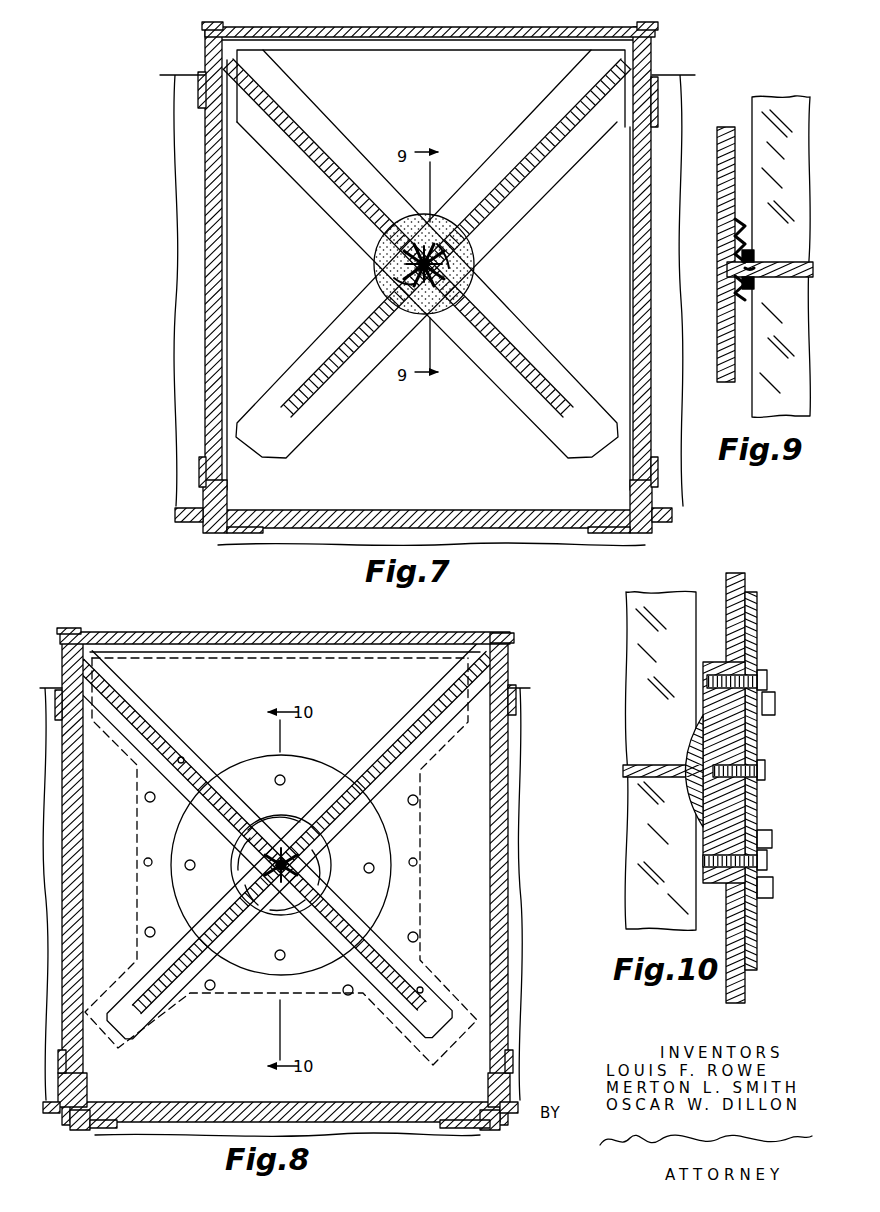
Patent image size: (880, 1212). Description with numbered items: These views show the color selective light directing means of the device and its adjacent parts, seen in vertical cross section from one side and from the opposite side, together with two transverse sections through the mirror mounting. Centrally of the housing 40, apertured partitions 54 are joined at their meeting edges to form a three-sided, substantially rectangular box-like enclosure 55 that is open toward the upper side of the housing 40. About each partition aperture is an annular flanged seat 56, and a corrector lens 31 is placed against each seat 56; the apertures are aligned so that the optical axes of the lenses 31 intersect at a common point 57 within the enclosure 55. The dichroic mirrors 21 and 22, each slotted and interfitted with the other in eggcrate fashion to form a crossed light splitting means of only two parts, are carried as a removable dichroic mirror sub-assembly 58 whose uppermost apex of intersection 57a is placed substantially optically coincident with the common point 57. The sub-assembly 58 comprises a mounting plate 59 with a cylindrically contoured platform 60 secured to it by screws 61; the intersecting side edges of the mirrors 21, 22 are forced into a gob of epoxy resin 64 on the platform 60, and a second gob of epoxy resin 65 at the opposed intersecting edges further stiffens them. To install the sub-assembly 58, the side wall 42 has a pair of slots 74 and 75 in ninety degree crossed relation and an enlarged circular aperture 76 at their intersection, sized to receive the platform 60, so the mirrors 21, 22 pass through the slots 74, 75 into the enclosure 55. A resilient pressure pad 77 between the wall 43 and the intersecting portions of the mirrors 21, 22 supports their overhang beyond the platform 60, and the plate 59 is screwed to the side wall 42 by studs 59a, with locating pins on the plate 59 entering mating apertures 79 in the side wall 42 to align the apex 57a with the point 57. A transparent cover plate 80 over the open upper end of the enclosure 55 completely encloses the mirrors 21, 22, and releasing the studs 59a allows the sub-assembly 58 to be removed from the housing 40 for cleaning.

In FIG. 7, the dichroic mirror 21 is at (335, 146).
In FIG. 9, the dichroic mirror 21 is at (753, 392).
In FIG. 8, the dichroic mirror 21 is at (397, 746).
In FIG. 10, the dichroic mirror 21 is at (634, 890).
In FIG. 7, the dichroic mirror 22 is at (540, 142).
In FIG. 9, the dichroic mirror 22 is at (792, 110).
In FIG. 8, the dichroic mirror 22 is at (182, 732).
In FIG. 10, the dichroic mirror 22 is at (630, 624).
In FIG. 7, the corrector lens 31 is at (224, 332).
In FIG. 8, the corrector lens 31 is at (63, 962).
In FIG. 7, the housing 40 is at (176, 524).
In FIG. 8, the housing 40 is at (518, 666).
In FIG. 8, the side wall 42 is at (152, 665).
In FIG. 10, the side wall 42 is at (748, 590).
In FIG. 7, the wall 43 is at (178, 74).
In FIG. 9, the wall 43 is at (726, 128).
In FIG. 8, the wall 43 is at (285, 912).
In FIG. 7, the apertured partition 54 is at (210, 78).
In FIG. 8, the apertured partition 54 is at (516, 690).
In FIG. 7, the enclosure 55 is at (240, 272).
In FIG. 8, the enclosure 55 is at (96, 887).
In FIG. 7, the annular flanged seat 56 is at (205, 100).
In FIG. 8, the annular flanged seat 56 is at (57, 712).
In FIG. 7, the common point 57 is at (405, 268).
In FIG. 8, the common point 57 is at (270, 868).
In FIG. 7, the apex of intersection 57a is at (418, 233).
In FIG. 8, the apex of intersection 57a is at (280, 852).
In FIG. 7, the dichroic mirror sub-assembly 58 is at (478, 264).
In FIG. 9, the dichroic mirror sub-assembly 58 is at (770, 96).
In FIG. 8, the dichroic mirror sub-assembly 58 is at (322, 764).
In FIG. 10, the dichroic mirror sub-assembly 58 is at (688, 598).
In FIG. 8, the mounting plate 59 is at (430, 892).
In FIG. 10, the mounting plate 59 is at (754, 636).
In FIG. 8, the studs 59a is at (145, 797).
In FIG. 10, the studs 59a is at (776, 703).
In FIG. 8, the cylindrically contoured platform 60 is at (252, 778).
In FIG. 10, the cylindrically contoured platform 60 is at (748, 740).
In FIG. 8, the screws 61 is at (286, 782).
In FIG. 10, the screws 61 is at (768, 676).
In FIG. 8, the epoxy resin 64 is at (328, 872).
In FIG. 10, the epoxy resin 64 is at (690, 792).
In FIG. 7, the second gob of epoxy resin 65 is at (447, 241).
In FIG. 9, the second gob of epoxy resin 65 is at (758, 284).
In FIG. 8, the slot 74 is at (426, 740).
In FIG. 8, the slot 75 is at (184, 758).
In FIG. 8, the circular aperture 76 is at (322, 972).
In FIG. 10, the circular aperture 76 is at (730, 662).
In FIG. 7, the resilient pressure pad 77 is at (392, 281).
In FIG. 9, the resilient pressure pad 77 is at (746, 235).
In FIG. 8, the apertures 79 is at (144, 862).
In FIG. 7, the transparent cover plate 80 is at (330, 29).
In FIG. 8, the transparent cover plate 80 is at (302, 632).